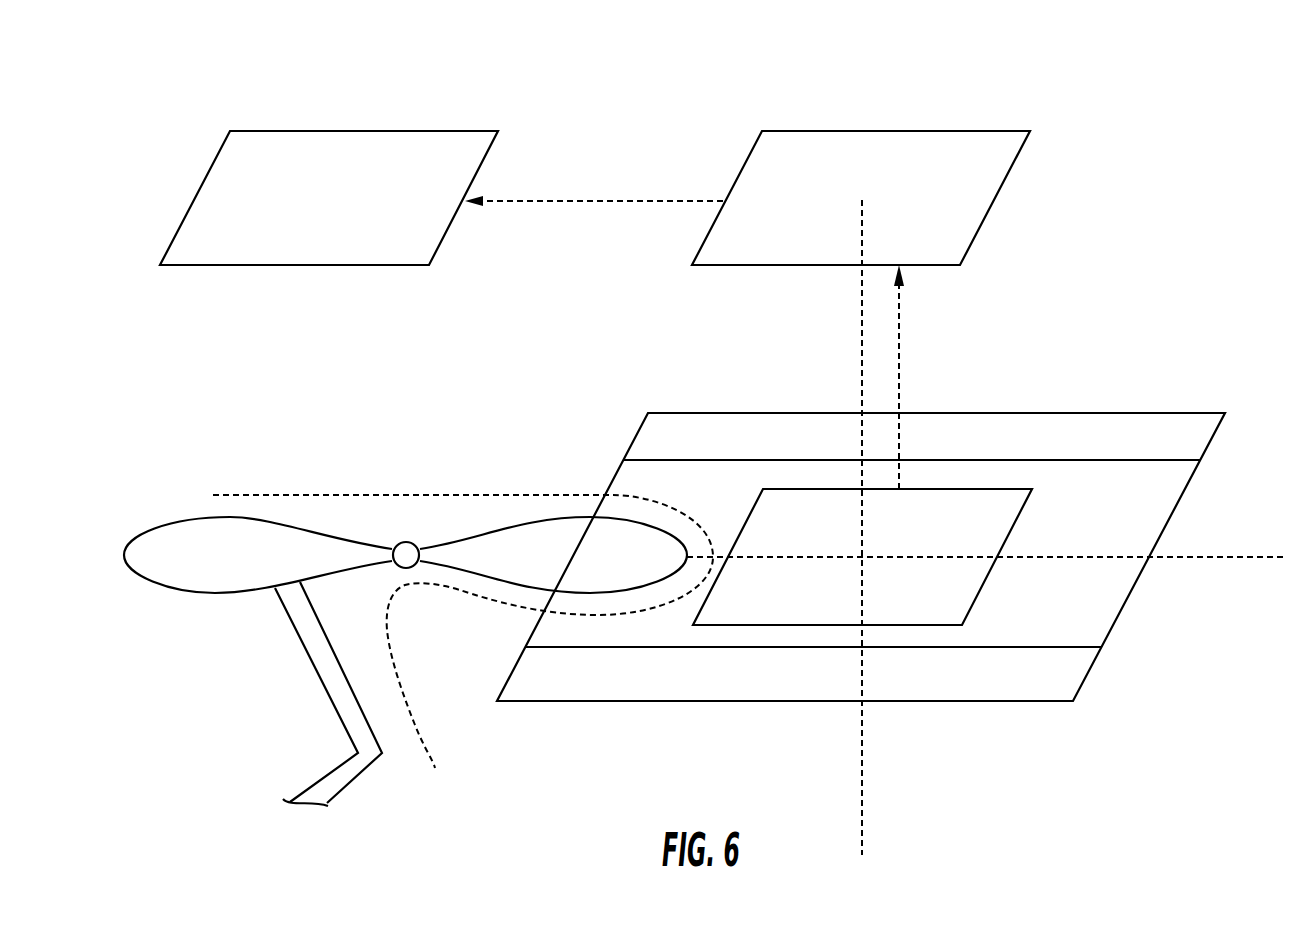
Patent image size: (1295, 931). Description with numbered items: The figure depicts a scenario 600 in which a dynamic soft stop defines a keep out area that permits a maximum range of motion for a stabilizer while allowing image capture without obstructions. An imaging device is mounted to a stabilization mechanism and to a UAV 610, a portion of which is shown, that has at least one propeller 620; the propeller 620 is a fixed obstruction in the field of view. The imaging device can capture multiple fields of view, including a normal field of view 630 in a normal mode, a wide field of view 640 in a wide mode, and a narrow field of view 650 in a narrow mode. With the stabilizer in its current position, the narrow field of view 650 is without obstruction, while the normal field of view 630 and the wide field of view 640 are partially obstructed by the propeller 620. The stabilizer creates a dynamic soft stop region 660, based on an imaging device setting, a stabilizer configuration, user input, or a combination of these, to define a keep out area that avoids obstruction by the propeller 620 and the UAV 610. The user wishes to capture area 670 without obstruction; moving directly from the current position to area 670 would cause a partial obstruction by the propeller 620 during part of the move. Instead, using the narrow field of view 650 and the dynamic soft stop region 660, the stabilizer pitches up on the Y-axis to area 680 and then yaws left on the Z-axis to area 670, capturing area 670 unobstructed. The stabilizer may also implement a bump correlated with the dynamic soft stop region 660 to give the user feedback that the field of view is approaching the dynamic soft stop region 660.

The scenario 600 is at (575, 57).
The UAV 610 is at (405, 623).
The propeller 620 is at (258, 518).
The normal field of view 630 is at (1145, 413).
The wide field of view 640 is at (1172, 460).
The narrow field of view 650 is at (975, 599).
The dynamic soft stop region 660 is at (490, 495).
The area 670 is at (350, 131).
The area 680 is at (882, 131).